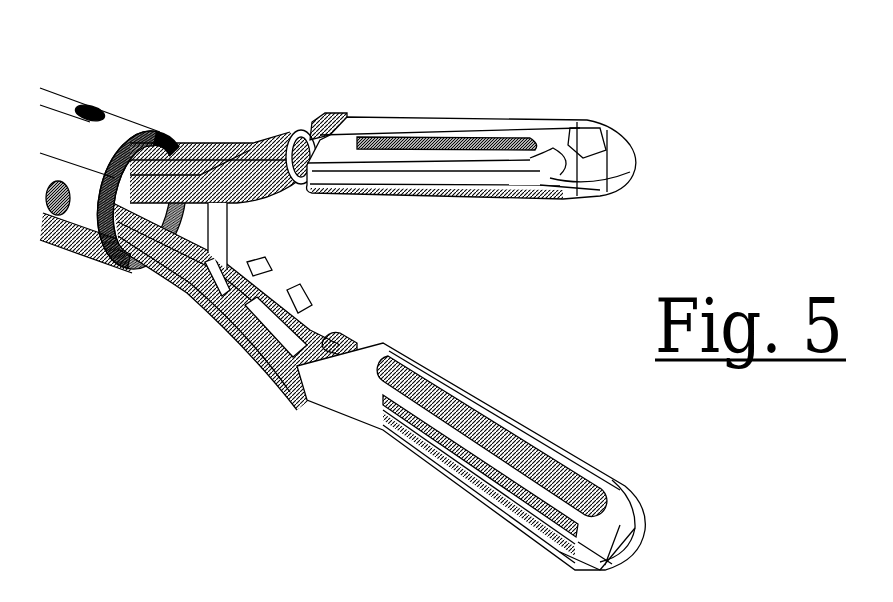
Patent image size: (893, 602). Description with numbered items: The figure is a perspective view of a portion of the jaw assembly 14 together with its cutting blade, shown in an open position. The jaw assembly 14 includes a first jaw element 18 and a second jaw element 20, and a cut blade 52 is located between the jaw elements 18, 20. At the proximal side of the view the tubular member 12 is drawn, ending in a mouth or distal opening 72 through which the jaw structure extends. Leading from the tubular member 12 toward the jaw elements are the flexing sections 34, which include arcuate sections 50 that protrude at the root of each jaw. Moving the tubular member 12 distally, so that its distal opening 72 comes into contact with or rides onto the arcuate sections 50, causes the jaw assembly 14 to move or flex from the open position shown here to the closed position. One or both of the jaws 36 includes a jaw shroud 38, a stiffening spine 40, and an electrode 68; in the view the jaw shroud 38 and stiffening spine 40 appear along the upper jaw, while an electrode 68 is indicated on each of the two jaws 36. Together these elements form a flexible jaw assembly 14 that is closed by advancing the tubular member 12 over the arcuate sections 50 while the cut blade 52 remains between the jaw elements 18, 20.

The tubular member 12 is at (83, 240).
The jaw assembly 14 is at (730, 172).
The first jaw element 18 is at (616, 130).
The second jaw element 20 is at (644, 529).
The flexing sections 34 is at (268, 110).
The jaws 36 is at (453, 130).
The jaw shroud 38 is at (588, 133).
The stiffening spine 40 is at (497, 131).
The arcuate sections 50 is at (290, 130).
The cut blade 52 is at (215, 242).
The electrode 68 is at (562, 197).
The distal opening 72 is at (155, 131).